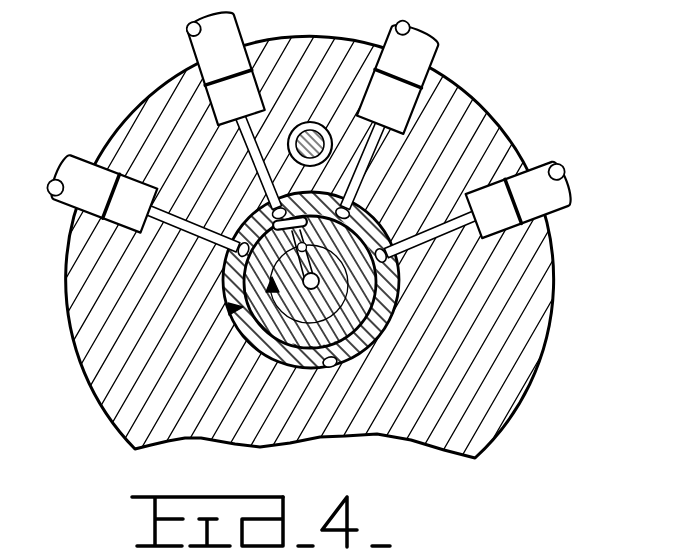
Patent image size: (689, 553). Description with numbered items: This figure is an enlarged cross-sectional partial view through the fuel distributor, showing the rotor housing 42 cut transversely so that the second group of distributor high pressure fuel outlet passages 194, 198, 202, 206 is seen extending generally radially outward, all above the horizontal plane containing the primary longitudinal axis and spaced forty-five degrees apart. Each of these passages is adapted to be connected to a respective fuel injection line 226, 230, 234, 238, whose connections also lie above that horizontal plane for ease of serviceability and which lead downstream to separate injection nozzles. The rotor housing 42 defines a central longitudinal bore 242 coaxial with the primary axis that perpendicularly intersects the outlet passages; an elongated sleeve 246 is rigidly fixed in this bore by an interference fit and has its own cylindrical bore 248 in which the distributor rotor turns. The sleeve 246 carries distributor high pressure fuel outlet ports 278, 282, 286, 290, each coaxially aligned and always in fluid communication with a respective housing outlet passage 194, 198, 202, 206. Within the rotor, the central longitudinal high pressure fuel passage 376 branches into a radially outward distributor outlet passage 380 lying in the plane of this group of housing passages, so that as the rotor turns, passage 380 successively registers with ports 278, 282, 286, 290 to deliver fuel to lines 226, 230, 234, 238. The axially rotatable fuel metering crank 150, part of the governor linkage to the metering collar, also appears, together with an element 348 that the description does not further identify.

The rotor housing 42 is at (516, 330).
The fuel metering crank 150 is at (328, 124).
The distributor high pressure fuel outlet passage 194 is at (188, 232).
The distributor high pressure fuel outlet passage 198 is at (251, 136).
The distributor high pressure fuel outlet passage 202 is at (369, 146).
The distributor high pressure fuel outlet passage 206 is at (428, 240).
The fuel injection line 226 is at (93, 162).
The fuel injection line 230 is at (242, 26).
The fuel injection line 234 is at (441, 50).
The fuel injection line 238 is at (534, 165).
The central longitudinal bore 242 is at (338, 365).
The elongated sleeve 246 is at (376, 318).
The cylindrical bore 248 is at (242, 358).
The distributor high pressure fuel outlet port 278 is at (237, 258).
The distributor high pressure fuel outlet port 282 is at (269, 206).
The distributor high pressure fuel outlet port 286 is at (347, 204).
The distributor high pressure fuel outlet port 290 is at (385, 260).
The rotation arrow 348 is at (228, 310).
The central longitudinal high pressure fuel passage 376 is at (262, 298).
The distributor high pressure fuel outlet passage 380 is at (310, 224).